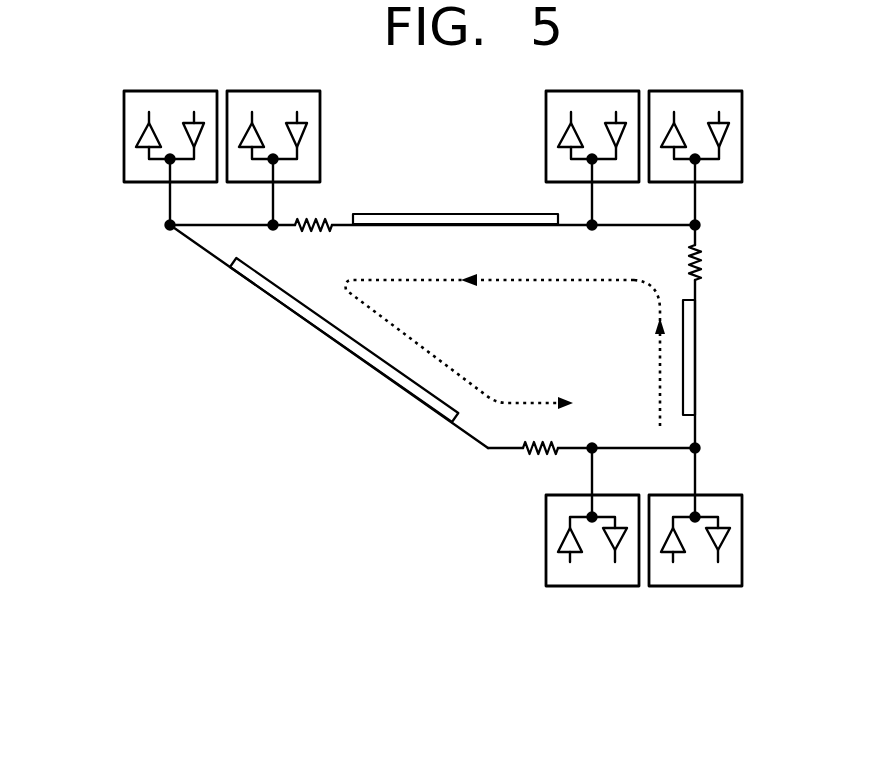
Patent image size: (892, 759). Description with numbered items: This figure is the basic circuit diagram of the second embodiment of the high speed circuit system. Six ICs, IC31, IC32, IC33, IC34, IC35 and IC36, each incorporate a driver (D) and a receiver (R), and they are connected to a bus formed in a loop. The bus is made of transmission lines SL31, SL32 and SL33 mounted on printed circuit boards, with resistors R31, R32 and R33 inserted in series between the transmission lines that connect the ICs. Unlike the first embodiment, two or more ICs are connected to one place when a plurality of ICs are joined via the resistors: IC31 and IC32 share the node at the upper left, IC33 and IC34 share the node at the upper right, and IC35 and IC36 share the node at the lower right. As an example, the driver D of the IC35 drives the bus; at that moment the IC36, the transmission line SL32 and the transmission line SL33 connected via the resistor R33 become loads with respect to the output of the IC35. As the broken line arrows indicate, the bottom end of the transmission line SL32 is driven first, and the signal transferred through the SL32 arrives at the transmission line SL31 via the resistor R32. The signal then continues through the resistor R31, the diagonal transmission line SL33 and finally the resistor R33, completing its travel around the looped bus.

The IC IC31 is at (122, 101).
The IC IC32 is at (320, 110).
The IC IC33 is at (545, 105).
The IC IC34 is at (742, 105).
The IC IC35 is at (742, 512).
The IC IC36 is at (545, 552).
The resistor R31 is at (313, 239).
The resistor R32 is at (718, 262).
The resistor R33 is at (541, 433).
The transmission line SL31 is at (455, 237).
The transmission line SL32 is at (697, 355).
The transmission line SL33 is at (328, 336).